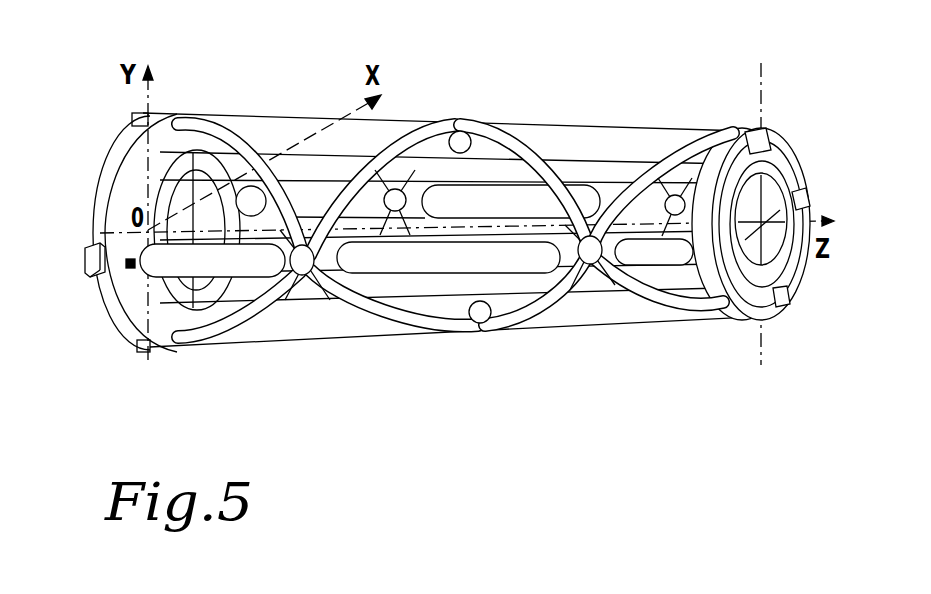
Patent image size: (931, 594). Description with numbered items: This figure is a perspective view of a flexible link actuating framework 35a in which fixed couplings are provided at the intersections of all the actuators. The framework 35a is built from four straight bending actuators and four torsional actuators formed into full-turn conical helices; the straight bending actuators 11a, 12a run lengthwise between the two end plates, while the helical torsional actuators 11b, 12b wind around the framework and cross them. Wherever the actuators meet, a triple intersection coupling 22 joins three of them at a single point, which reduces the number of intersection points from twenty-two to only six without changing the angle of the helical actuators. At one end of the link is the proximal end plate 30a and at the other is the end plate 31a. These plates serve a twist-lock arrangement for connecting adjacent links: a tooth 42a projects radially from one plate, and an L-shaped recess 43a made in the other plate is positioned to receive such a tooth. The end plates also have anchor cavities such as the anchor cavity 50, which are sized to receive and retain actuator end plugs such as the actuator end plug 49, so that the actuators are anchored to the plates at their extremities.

The proximal end plate 30a is at (137, 150).
The end plate 31a is at (767, 136).
The straight bending actuator 11a is at (280, 133).
The torsional actuator 11b is at (562, 128).
The actuating framework 35a is at (418, 120).
The triple intersection coupling 22 is at (305, 275).
The straight bending actuator 12a is at (353, 336).
The torsional actuator 12b is at (642, 318).
The L-shaped recess 43a is at (742, 130).
The tooth 42a is at (92, 278).
The actuator end plug 49 is at (150, 338).
The anchor cavity 50 is at (130, 262).